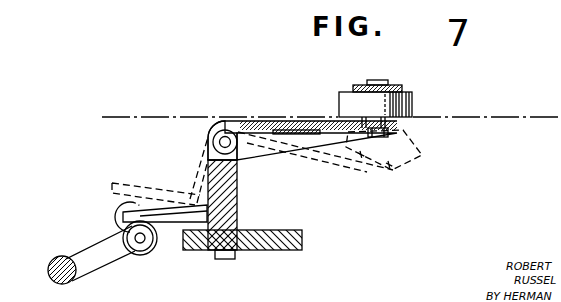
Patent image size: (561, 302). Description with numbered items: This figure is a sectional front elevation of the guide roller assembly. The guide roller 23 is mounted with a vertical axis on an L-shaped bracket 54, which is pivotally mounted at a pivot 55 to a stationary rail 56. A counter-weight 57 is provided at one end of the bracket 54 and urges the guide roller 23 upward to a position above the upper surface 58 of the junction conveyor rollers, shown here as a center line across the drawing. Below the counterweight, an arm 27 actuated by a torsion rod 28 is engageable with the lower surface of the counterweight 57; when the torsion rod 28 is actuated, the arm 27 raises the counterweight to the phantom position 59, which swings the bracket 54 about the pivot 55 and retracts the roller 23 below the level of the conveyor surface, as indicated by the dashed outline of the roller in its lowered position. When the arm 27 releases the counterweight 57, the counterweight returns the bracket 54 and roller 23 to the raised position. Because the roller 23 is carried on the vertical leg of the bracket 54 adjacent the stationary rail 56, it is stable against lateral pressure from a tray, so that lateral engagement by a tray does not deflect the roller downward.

The guide roller 23 is at (412, 103).
The arm 27 is at (112, 255).
The torsion rod 28 is at (62, 256).
The L-shaped bracket 54 is at (257, 121).
The pivot 55 is at (228, 145).
The stationary rail 56 is at (230, 200).
The counter-weight 57 is at (168, 210).
The upper surface 58 is at (471, 116).
The phantom position 59 is at (135, 183).